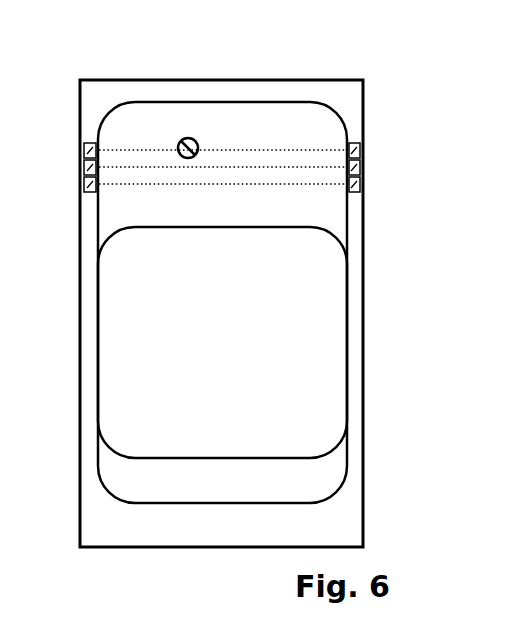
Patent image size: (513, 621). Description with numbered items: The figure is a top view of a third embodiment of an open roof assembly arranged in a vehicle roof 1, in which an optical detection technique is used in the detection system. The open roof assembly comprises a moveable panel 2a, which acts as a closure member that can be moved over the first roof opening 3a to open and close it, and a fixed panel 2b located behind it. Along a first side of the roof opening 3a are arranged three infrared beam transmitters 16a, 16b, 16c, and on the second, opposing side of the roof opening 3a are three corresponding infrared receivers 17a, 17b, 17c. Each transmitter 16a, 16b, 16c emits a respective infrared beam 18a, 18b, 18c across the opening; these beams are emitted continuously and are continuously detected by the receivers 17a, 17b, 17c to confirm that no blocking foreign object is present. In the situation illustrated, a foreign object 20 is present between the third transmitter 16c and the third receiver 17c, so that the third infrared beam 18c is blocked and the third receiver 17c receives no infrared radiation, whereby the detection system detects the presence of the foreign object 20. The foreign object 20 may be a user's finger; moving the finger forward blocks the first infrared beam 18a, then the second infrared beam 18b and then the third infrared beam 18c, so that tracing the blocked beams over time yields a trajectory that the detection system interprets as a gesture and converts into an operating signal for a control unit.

The vehicle roof 1 is at (245, 93).
The moveable panel 2a is at (318, 368).
The fixed panel 2b is at (262, 483).
The first roof opening 3a is at (327, 128).
The first infrared beam transmitter 16a is at (53, 201).
The second infrared beam transmitter 16b is at (48, 161).
The third infrared beam transmitter 16c is at (52, 138).
The first infrared receiver 17a is at (394, 201).
The second infrared receiver 17b is at (395, 160).
The third infrared receiver 17c is at (394, 138).
The first infrared beam 18a is at (322, 185).
The second infrared beam 18b is at (263, 167).
The third infrared beam 18c is at (138, 152).
The foreign object 20 is at (190, 138).